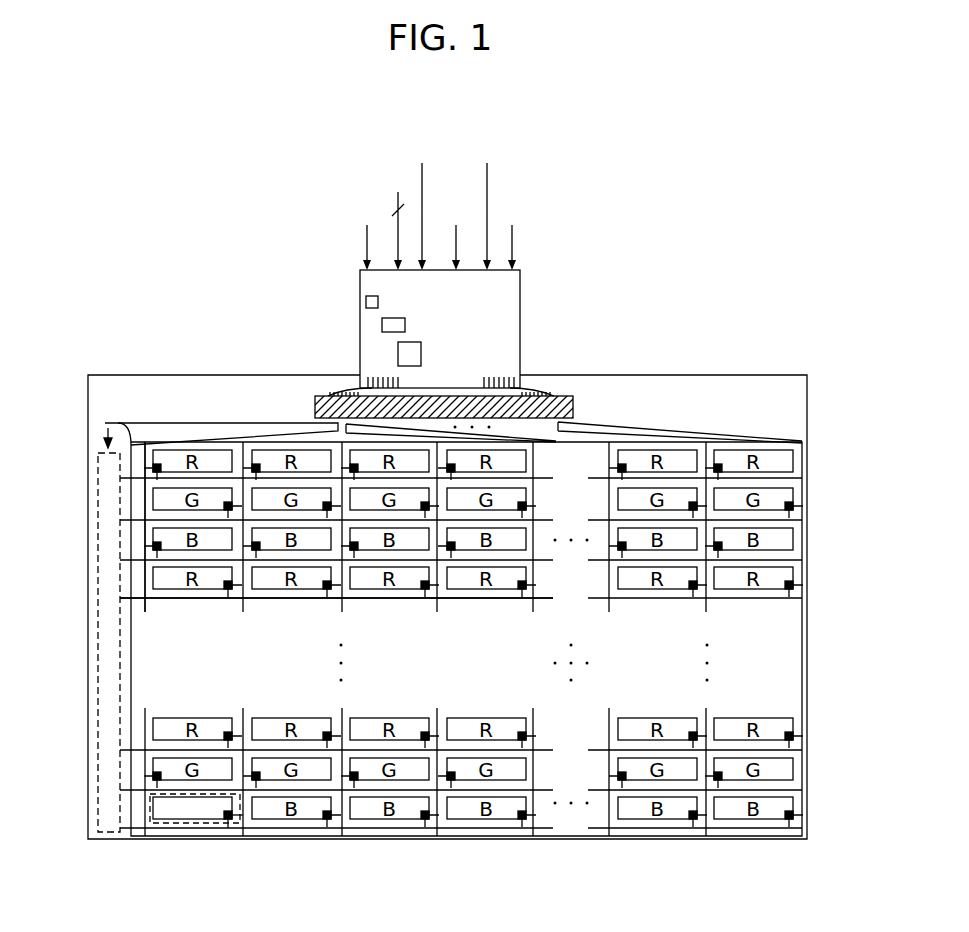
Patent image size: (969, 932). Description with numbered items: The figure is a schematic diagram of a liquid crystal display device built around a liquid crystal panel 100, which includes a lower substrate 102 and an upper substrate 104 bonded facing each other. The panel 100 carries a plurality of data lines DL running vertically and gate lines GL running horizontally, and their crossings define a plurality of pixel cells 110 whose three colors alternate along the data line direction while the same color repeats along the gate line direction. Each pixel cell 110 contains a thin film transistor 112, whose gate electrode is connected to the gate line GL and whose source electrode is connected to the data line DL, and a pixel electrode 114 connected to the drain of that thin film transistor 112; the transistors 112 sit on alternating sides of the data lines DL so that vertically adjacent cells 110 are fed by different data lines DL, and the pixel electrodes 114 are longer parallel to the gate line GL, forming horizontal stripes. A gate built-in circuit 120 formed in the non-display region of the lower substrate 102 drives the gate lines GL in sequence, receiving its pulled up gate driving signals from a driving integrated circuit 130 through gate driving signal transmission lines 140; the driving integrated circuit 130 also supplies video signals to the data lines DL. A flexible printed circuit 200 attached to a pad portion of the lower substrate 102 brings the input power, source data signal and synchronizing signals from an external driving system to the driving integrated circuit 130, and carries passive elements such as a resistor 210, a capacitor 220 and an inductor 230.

The liquid crystal panel 100 is at (718, 330).
The lower substrate 102 is at (793, 387).
The upper substrate 104 is at (108, 428).
The pixel cell 110 is at (155, 825).
The thin film transistor 112 is at (228, 819).
The pixel electrode 114 is at (182, 815).
The gate built-in circuit 120 is at (98, 645).
The driving integrated circuit 130 is at (575, 405).
The gate driving signal transmission lines 140 is at (190, 428).
The flexible printed circuit 200 is at (520, 283).
The resistor 210 is at (366, 302).
The capacitor 220 is at (382, 325).
The inductor 230 is at (398, 352).
The data line DL is at (145, 600).
The gate line GL is at (283, 598).